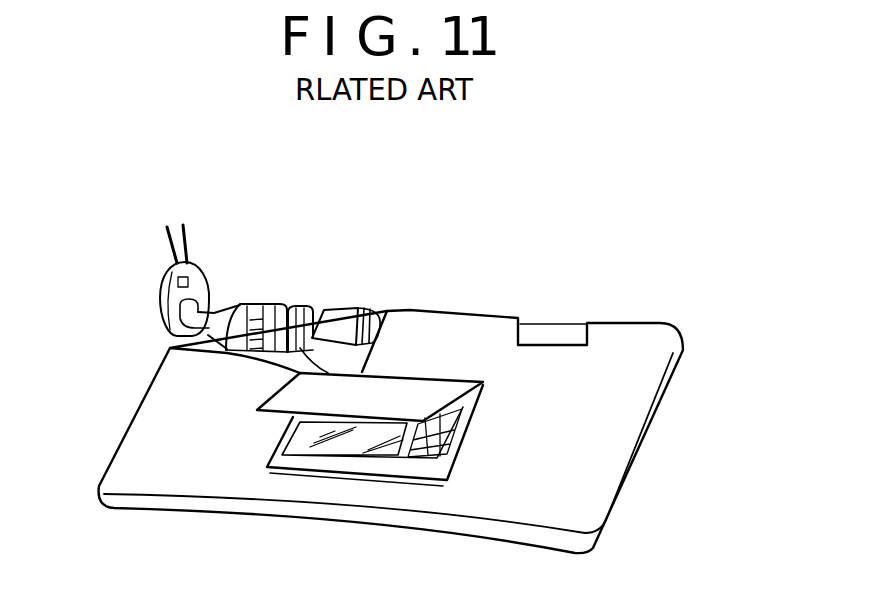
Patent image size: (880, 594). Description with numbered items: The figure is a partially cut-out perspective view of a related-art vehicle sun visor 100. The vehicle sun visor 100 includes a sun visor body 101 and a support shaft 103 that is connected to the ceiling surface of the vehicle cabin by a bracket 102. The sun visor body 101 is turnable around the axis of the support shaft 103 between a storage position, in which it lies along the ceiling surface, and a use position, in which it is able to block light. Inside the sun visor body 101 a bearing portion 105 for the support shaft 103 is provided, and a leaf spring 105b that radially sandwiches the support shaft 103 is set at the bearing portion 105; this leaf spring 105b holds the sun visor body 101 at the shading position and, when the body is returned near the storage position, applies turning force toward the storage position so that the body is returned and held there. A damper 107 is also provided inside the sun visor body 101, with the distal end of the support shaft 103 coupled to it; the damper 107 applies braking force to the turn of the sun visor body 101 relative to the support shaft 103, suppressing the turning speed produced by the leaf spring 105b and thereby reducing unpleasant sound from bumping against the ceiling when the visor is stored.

The vehicle sun visor 100 is at (326, 268).
The sun visor body 101 is at (628, 352).
The bracket 102 is at (204, 274).
The support shaft 103 is at (214, 319).
The bearing portion 105 is at (293, 313).
The leaf spring 105b is at (266, 305).
The damper 107 is at (338, 318).